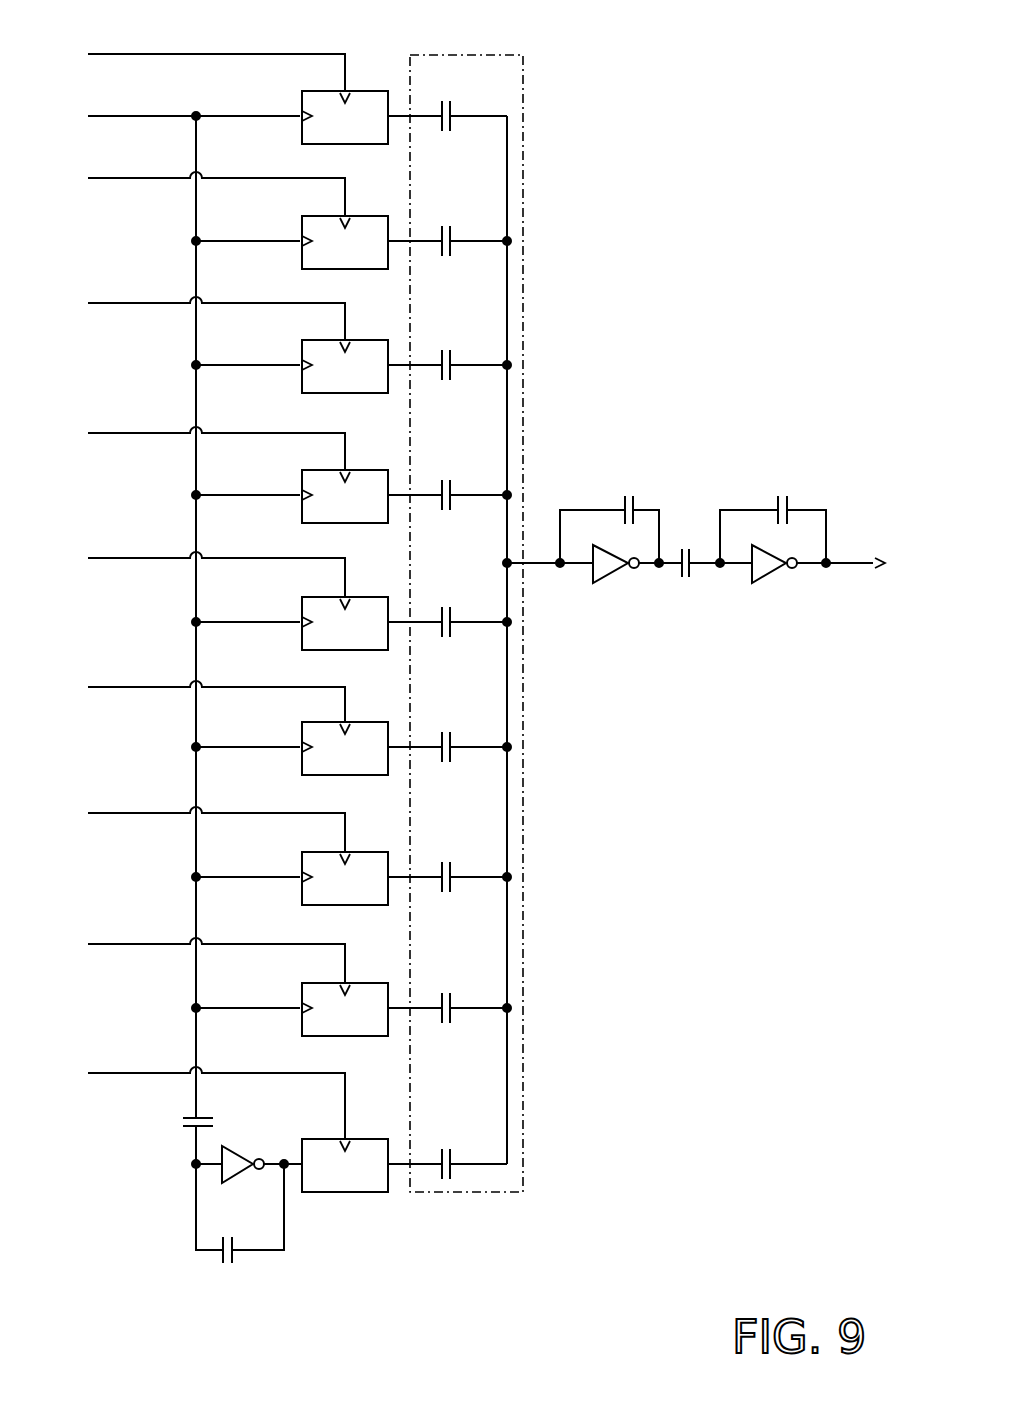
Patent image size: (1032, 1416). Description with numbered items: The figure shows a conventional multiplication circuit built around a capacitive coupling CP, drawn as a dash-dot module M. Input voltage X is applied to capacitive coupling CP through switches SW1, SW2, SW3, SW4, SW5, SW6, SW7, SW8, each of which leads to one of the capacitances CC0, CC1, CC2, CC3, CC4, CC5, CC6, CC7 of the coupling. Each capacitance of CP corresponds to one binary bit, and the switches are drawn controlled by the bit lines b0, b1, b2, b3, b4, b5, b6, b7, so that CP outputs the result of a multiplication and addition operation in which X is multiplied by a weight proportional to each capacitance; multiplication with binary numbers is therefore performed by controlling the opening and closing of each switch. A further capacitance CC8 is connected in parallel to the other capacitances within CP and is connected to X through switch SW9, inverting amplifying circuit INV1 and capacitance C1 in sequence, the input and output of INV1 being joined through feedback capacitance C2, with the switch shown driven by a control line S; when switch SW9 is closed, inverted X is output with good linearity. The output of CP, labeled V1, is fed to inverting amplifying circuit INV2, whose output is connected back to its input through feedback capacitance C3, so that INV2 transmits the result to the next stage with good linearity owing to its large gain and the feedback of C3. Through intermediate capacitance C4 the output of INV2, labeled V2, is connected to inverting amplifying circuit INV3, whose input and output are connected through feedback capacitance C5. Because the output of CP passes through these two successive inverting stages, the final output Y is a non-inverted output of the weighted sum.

The input bit b0 is at (191, 62).
The input bit b1 is at (191, 188).
The input bit b2 is at (191, 313).
The input bit b3 is at (191, 443).
The input bit b4 is at (191, 569).
The input bit b5 is at (191, 696).
The input bit b6 is at (191, 824).
The input bit b7 is at (191, 955).
The input voltage X is at (117, 632).
The control signal S is at (196, 1096).
The switch SW1 is at (290, 117).
The switch SW2 is at (290, 242).
The switch SW3 is at (290, 366).
The switch SW4 is at (290, 496).
The switch SW5 is at (290, 623).
The switch SW6 is at (290, 748).
The switch SW7 is at (290, 878).
The switch SW8 is at (290, 1009).
The switch SW9 is at (345, 1165).
The capacitance CC0 is at (447, 97).
The capacitance CC1 is at (449, 222).
The capacitance CC2 is at (449, 346).
The capacitance CC3 is at (449, 476).
The capacitance CC4 is at (449, 603).
The capacitance CC5 is at (449, 728).
The capacitance CC6 is at (449, 858).
The capacitance CC7 is at (449, 989).
The capacitance CC8 is at (447, 1145).
The capacitor module M is at (534, 47).
The capacitive coupling CP is at (525, 83).
The capacitance C1 is at (177, 1118).
The feedback capacitance C2 is at (240, 1230).
The feedback capacitance C3 is at (609, 510).
The intermediate capacitance C4 is at (712, 546).
The feedback capacitance C5 is at (773, 510).
The inverting amplifying circuit INV1 is at (247, 1189).
The inverting amplifying circuit INV2 is at (637, 584).
The inverting amplifying circuit INV3 is at (791, 584).
The node voltage V1 is at (541, 567).
The node voltage V2 is at (671, 567).
The output signal Y is at (873, 563).